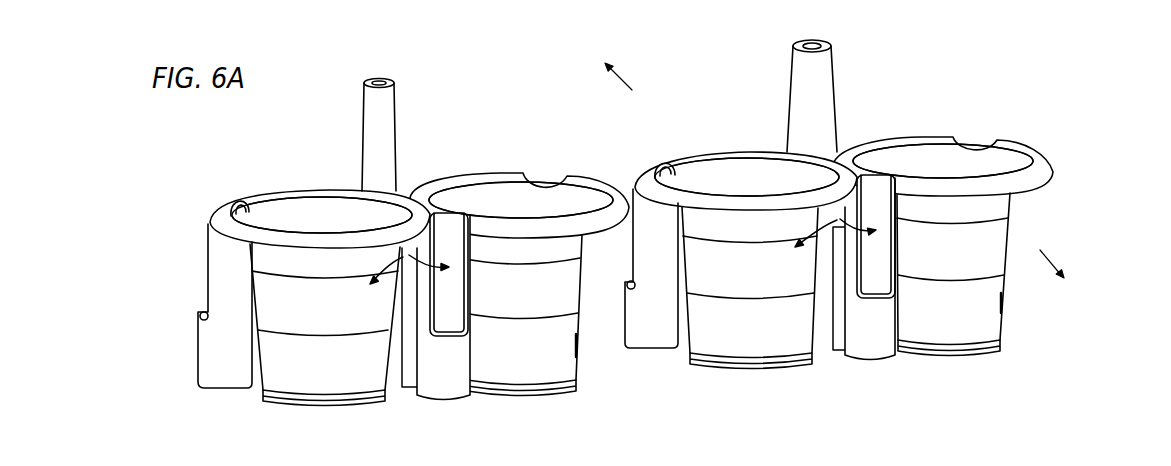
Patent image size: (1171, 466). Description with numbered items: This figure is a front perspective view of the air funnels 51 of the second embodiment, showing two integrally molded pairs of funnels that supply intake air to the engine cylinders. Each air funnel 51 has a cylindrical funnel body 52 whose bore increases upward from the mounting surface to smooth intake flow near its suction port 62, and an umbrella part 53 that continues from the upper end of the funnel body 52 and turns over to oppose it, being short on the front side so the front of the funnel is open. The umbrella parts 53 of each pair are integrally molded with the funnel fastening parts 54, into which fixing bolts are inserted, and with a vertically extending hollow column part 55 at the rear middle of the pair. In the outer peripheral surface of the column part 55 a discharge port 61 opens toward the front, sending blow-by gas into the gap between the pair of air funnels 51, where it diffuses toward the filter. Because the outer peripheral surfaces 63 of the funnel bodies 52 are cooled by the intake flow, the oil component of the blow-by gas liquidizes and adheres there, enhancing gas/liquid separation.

The air funnel 51 is at (625, 245).
The funnel body 52 is at (636, 318).
The umbrella part 53 is at (212, 219).
The funnel fastening part 54 is at (204, 312).
The column part 55 is at (371, 133).
The discharge port 61 is at (403, 322).
The suction port 62 is at (303, 213).
The outer peripheral surface 63 is at (285, 377).